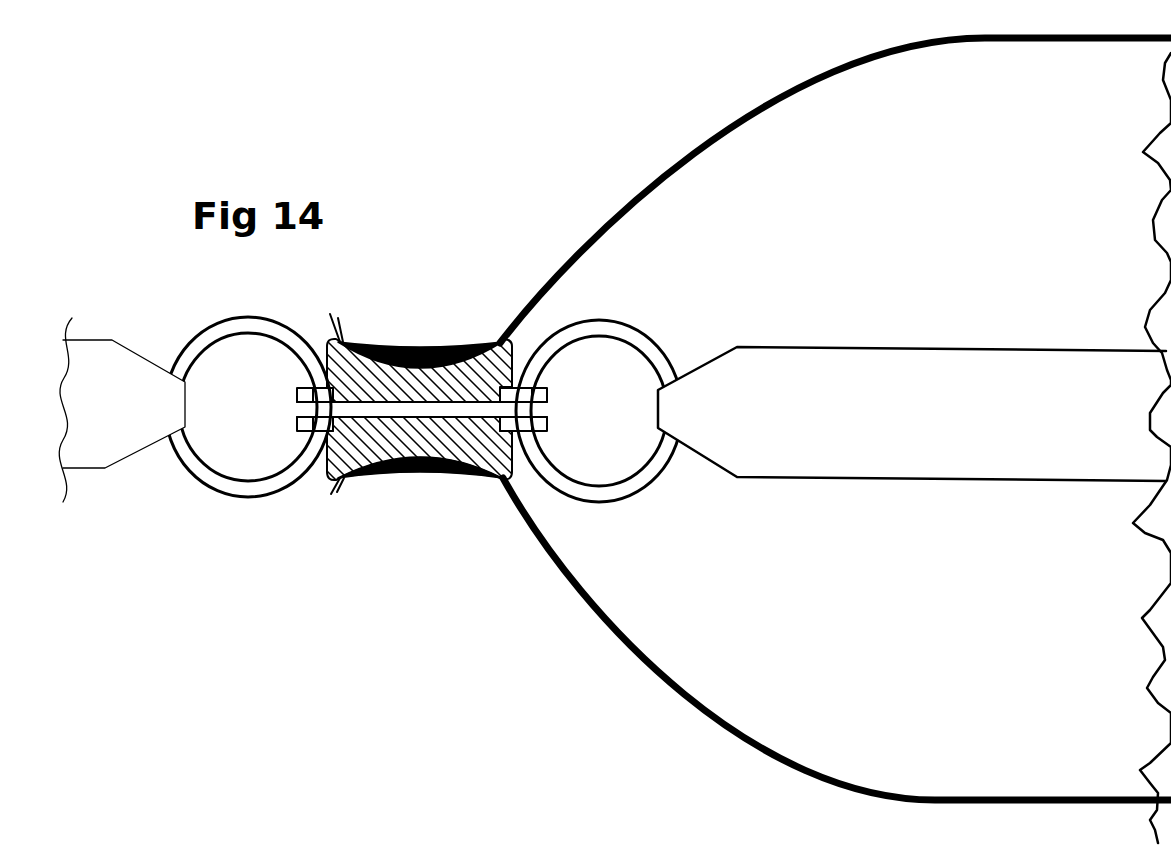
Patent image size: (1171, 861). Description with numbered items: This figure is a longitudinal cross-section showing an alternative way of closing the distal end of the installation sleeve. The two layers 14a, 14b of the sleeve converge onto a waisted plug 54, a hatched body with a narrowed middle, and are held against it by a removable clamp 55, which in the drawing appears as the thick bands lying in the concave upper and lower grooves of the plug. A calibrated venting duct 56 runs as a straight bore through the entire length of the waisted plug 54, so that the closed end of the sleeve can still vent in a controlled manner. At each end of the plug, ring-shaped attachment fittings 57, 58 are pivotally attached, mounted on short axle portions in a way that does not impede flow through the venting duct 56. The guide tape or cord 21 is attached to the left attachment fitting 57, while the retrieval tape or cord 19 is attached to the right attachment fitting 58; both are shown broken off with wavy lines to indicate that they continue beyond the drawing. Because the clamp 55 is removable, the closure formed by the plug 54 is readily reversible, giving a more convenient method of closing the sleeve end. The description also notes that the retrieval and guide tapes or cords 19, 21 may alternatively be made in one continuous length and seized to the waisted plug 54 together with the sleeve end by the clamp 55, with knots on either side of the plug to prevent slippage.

The layer of installation sleeve 14a is at (685, 694).
The layer of installation sleeve 14b is at (803, 764).
The retrieval tape or cord 19 is at (875, 393).
The guide tape or cord 21 is at (117, 445).
The waisted plug 54 is at (397, 370).
The removable clamp 55 is at (411, 467).
The calibrated venting duct 56 is at (473, 410).
The attachment fitting 57 is at (245, 492).
The attachment fitting 58 is at (643, 481).